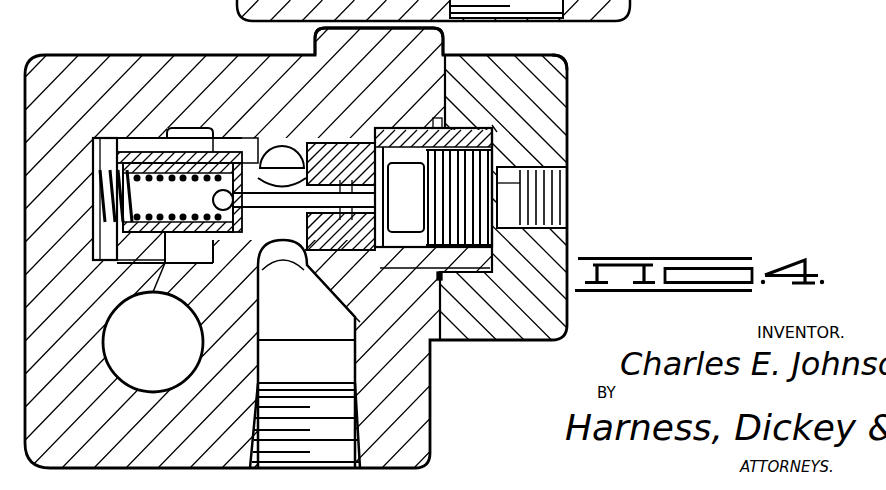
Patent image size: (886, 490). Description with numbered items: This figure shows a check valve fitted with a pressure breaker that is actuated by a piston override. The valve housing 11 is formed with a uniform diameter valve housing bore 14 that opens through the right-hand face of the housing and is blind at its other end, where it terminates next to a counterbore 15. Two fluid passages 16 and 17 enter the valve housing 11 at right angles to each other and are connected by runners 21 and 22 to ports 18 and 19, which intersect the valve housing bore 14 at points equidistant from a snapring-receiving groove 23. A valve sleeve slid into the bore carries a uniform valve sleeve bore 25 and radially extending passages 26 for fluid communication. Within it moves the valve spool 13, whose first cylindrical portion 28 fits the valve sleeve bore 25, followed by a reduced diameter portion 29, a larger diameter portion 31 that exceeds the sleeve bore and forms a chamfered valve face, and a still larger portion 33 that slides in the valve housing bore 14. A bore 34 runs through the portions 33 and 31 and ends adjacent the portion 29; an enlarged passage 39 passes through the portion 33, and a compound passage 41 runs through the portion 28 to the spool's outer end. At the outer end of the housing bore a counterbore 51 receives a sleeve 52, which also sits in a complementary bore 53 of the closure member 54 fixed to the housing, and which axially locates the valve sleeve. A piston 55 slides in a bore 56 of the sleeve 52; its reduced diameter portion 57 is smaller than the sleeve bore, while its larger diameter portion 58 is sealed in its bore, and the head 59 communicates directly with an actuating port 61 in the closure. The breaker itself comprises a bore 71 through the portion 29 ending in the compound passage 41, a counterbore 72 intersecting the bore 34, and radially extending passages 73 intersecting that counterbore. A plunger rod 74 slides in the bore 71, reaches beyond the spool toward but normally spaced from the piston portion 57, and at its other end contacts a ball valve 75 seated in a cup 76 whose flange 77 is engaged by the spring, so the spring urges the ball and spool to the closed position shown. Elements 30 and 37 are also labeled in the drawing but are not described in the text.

The valve housing 11 is at (92, 62).
The valve spool 13 is at (237, 289).
The valve housing bore 14 is at (368, 142).
The counterbore 15 is at (118, 163).
The fluid passage 16 is at (103, 342).
The fluid passage 17 is at (260, 366).
The port 18 is at (190, 128).
The port 19 is at (379, 57).
The runner 21 is at (165, 283).
The runner 22 is at (305, 404).
The snapring-receiving groove 23 is at (141, 296).
The valve sleeve bore 25 is at (271, 320).
The radially extending passages 26 is at (351, 155).
The first cylindrical portion 28 is at (338, 291).
The reduced diameter portion 29 is at (283, 276).
The end cap 30 is at (75, 202).
The larger diameter portion 31 is at (138, 143).
The larger diameter portion 33 is at (169, 156).
The bore 34 is at (83, 280).
The guide 37 is at (264, 109).
The enlarged passage 39 is at (95, 178).
The compound passage 41 is at (405, 160).
The counterbore 51 is at (433, 151).
The sleeve 52 is at (498, 171).
The complementary bore 53 is at (474, 306).
The closure member 54 is at (563, 58).
The piston 55 is at (500, 163).
The bore 56 is at (462, 166).
The reduced diameter portion 57 is at (463, 197).
The larger diameter portion 58 is at (492, 126).
The head 59 is at (493, 262).
The actuating port 61 is at (507, 180).
The bore 71 is at (240, 328).
The counterbore 72 is at (327, 162).
The radially extending passages 73 is at (285, 149).
The plunger rod 74 is at (373, 318).
The ball valve 75 is at (161, 196).
The cup 76 is at (215, 128).
The flange 77 is at (307, 145).